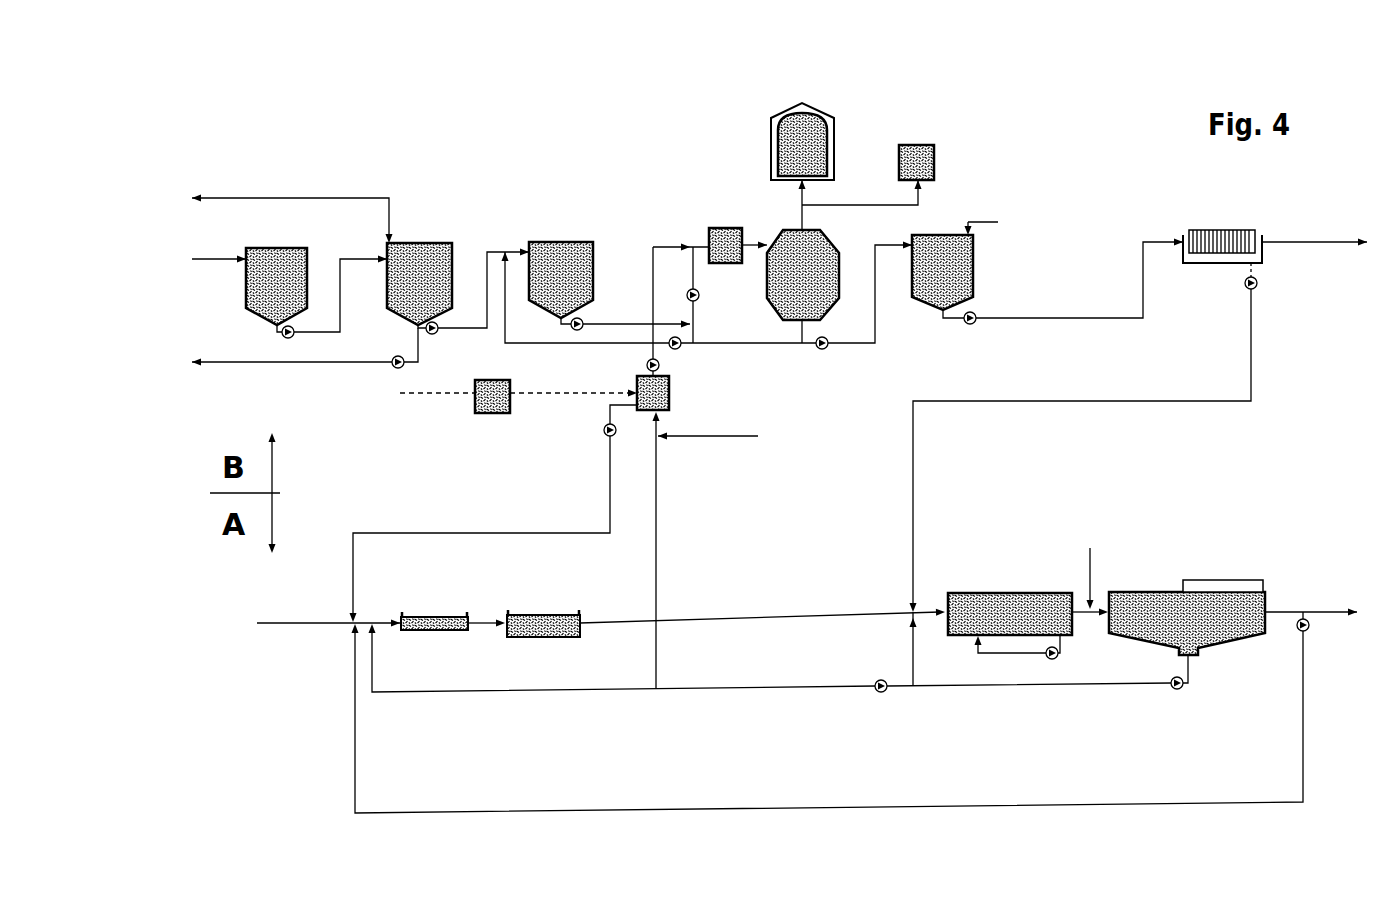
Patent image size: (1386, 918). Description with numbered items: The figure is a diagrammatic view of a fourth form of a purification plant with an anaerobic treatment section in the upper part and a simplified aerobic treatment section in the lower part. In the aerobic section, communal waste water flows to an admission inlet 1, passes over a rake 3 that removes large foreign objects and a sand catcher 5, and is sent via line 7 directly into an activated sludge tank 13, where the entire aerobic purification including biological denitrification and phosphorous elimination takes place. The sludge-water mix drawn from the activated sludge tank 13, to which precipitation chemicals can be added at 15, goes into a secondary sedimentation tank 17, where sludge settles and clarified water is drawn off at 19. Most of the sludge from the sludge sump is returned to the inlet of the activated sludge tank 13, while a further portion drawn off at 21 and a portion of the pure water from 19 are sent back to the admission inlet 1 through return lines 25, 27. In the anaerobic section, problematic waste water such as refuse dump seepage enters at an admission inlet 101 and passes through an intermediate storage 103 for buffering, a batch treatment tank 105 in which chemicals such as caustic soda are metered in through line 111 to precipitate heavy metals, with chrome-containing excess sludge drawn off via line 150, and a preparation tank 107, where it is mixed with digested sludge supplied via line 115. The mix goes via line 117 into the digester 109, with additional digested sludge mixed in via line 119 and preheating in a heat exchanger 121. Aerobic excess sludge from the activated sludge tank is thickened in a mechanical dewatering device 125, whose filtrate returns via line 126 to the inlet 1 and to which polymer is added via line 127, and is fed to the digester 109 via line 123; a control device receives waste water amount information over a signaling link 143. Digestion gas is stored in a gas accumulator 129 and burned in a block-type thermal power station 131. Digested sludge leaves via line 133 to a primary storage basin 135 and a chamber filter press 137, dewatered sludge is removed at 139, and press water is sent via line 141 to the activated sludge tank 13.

The admission inlet 1 is at (276, 622).
The rake 3 is at (450, 615).
The sand catcher 5 is at (525, 615).
The line 7 is at (708, 612).
The activated sludge tank 13 is at (1052, 600).
The precipitation chemical addition point 15 is at (1081, 578).
The secondary sedimentation tank 17 is at (1165, 600).
The clarified water draw-off 19 is at (1311, 604).
The sludge draw-off 21 is at (1198, 668).
The return line 25 is at (770, 653).
The return line 27 is at (831, 712).
The admission inlet 101 is at (340, 284).
The intermediate storage 103 is at (249, 280).
The batch treatment tank 105 is at (458, 277).
The preparation tank 107 is at (561, 272).
The digester 109 is at (832, 248).
The line 111 is at (292, 211).
The line 115 is at (659, 300).
The line 117 is at (636, 316).
The line 119 is at (698, 332).
The heat exchanger 121 is at (738, 235).
The line 123 is at (680, 296).
The mechanical dewatering device 125 is at (638, 384).
The line 126 is at (536, 526).
The line 127 is at (706, 550).
The gas accumulator 129 is at (812, 115).
The block-type thermal power station 131 is at (930, 145).
The line 133 is at (864, 296).
The primary storage basin 135 is at (924, 236).
The chamber filter press 137 is at (1238, 232).
The dewatered sludge removal point 139 is at (1325, 246).
The filtrate discharge line 141 is at (1105, 404).
The signaling link 143 is at (518, 390).
The line 150 is at (305, 349).